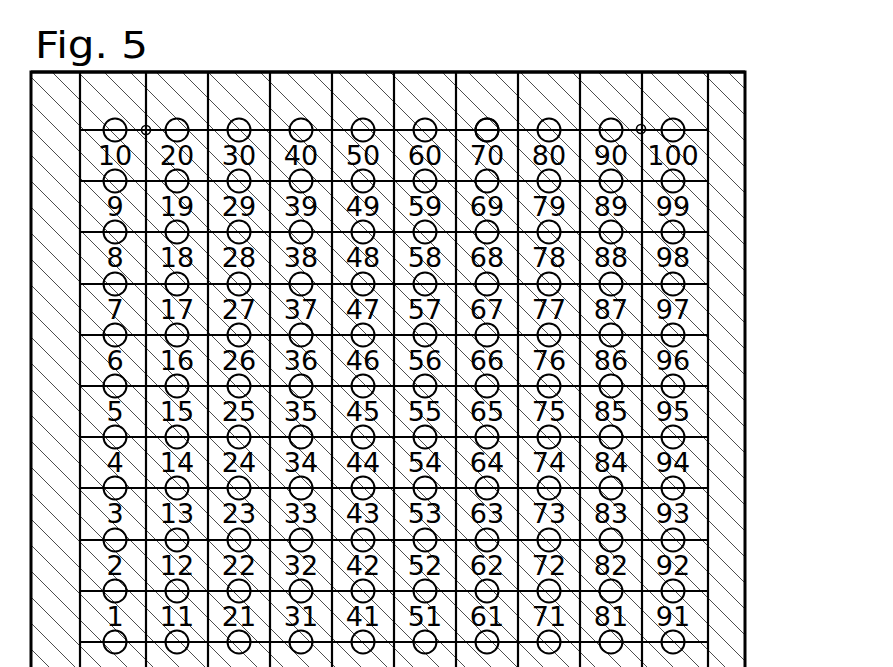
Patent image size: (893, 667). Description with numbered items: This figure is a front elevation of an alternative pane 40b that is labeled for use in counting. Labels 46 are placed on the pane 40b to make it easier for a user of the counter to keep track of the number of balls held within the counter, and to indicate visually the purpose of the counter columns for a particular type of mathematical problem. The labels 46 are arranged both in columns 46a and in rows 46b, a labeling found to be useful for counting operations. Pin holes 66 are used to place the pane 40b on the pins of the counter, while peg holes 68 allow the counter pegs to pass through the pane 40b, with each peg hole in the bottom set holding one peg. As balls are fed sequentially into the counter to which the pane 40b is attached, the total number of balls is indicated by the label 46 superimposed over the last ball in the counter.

The pane 40b is at (698, 48).
The columns of labels 46a is at (362, 72).
The rows of labels 46b is at (712, 153).
The labels 46 is at (692, 245).
The pin holes 66 is at (638, 125).
The peg holes 68 is at (485, 118).